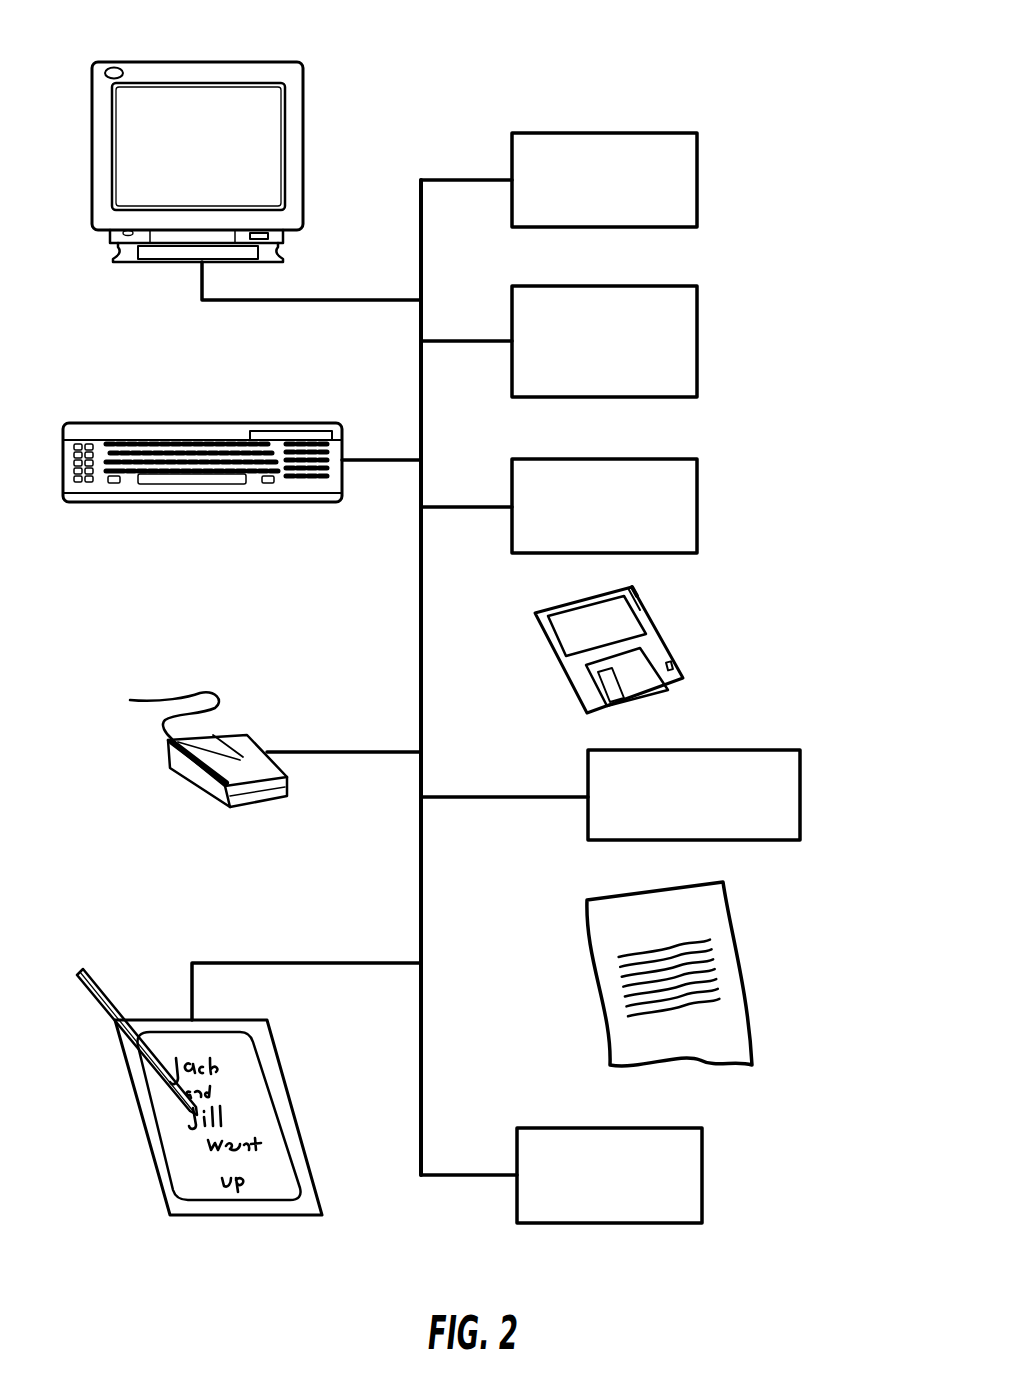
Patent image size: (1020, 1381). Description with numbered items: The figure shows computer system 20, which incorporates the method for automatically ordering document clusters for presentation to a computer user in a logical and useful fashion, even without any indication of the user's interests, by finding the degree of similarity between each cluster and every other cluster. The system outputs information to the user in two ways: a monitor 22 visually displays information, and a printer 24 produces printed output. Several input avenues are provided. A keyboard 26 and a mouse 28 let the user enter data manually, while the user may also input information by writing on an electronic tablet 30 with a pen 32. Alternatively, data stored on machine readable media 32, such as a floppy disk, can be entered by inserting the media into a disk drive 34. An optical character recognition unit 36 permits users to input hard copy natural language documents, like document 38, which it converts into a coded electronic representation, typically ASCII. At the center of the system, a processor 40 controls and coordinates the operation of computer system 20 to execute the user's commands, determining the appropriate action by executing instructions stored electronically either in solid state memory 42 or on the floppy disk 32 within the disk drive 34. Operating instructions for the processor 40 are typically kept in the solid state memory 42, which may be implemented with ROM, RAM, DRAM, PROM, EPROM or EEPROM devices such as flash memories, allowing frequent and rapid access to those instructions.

The computer system 20 is at (727, 147).
The monitor 22 is at (205, 62).
The printer 24 is at (703, 1185).
The keyboard 26 is at (231, 423).
The mouse 28 is at (178, 773).
The electronic tablet 30 is at (282, 1108).
The pen / machine readable media 32 is at (108, 998).
The disk drive 34 is at (699, 510).
The optical character recognition unit 36 is at (745, 750).
The document 38 is at (740, 960).
The processor 40 is at (628, 132).
The solid state memory 42 is at (699, 346).